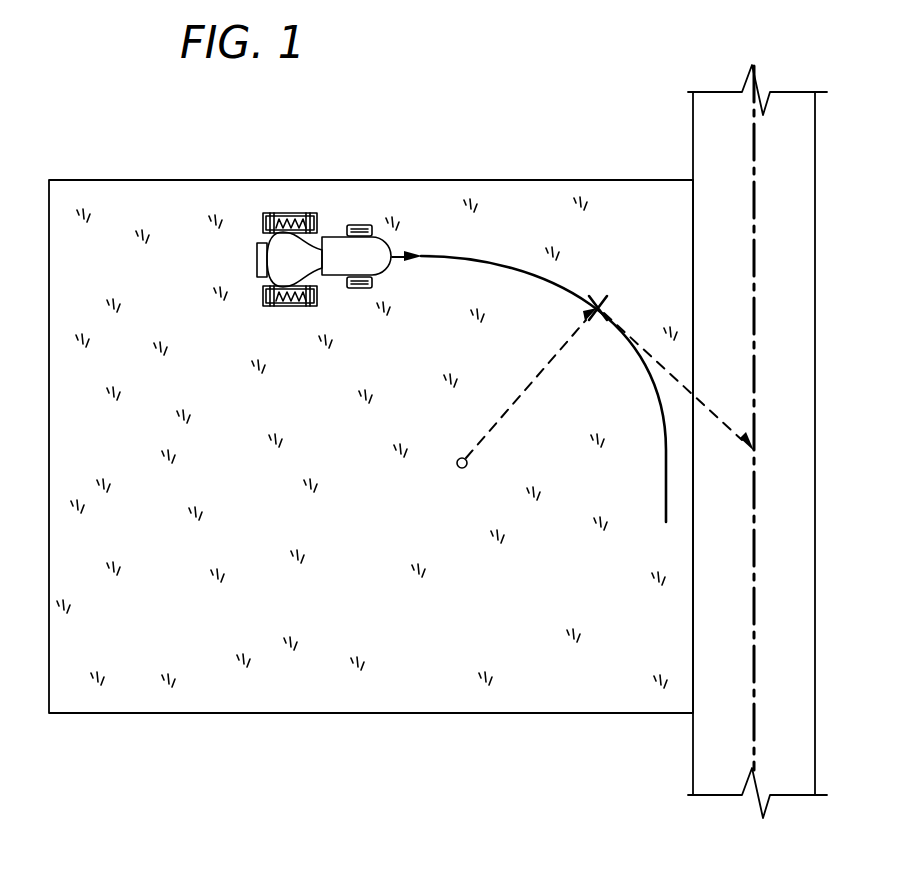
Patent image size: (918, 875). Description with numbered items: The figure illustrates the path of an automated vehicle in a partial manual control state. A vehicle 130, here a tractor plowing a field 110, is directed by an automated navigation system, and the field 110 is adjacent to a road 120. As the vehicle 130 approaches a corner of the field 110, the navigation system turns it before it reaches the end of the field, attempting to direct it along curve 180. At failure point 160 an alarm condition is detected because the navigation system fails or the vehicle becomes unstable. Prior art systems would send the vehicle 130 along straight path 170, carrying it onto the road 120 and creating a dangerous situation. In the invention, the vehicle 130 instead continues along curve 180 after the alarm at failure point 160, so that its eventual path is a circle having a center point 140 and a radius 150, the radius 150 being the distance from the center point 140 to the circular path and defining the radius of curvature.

The field 110 is at (124, 180).
The road 120 is at (695, 130).
The vehicle 130 is at (338, 250).
The center point 140 is at (457, 466).
The radius 150 is at (533, 382).
The failure point 160 is at (607, 296).
The straight path 170 is at (717, 412).
The curve 180 is at (665, 486).